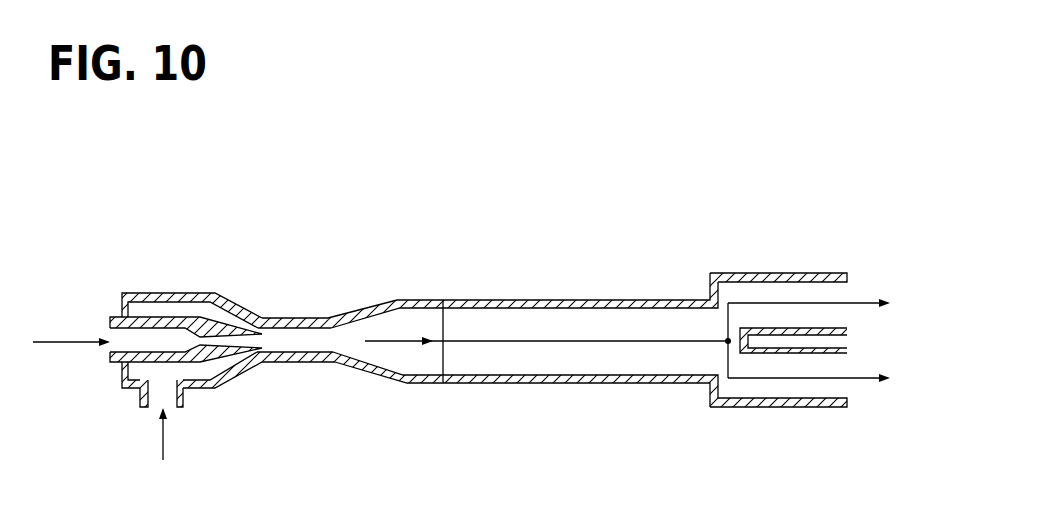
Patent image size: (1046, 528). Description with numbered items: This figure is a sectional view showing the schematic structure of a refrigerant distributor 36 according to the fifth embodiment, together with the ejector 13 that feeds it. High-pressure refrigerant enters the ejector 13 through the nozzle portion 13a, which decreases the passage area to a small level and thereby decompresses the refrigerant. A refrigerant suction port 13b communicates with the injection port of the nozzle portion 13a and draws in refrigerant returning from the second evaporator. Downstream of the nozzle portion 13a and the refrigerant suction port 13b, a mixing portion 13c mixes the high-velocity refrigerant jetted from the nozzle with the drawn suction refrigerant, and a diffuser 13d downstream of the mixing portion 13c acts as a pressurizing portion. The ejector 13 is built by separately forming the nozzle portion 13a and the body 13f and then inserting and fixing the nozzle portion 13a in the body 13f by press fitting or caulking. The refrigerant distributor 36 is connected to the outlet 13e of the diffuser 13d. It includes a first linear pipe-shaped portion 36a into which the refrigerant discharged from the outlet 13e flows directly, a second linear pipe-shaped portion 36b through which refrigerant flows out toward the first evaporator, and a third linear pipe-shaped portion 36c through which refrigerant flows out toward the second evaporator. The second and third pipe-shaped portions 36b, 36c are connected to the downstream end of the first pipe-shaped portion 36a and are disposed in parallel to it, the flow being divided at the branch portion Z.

The ejector 13 is at (320, 314).
The nozzle portion 13a is at (190, 340).
The refrigerant suction port 13b is at (152, 410).
The mixing portion 13c is at (290, 340).
The diffuser 13d is at (400, 377).
The outlet 13e is at (443, 355).
The body 13f is at (390, 305).
The refrigerant distributor 36 is at (575, 288).
The first linear pipe-shaped portion 36a is at (585, 365).
The second linear pipe-shaped portion 36b is at (788, 292).
The third linear pipe-shaped portion 36c is at (788, 390).
The branch portion Z is at (728, 341).